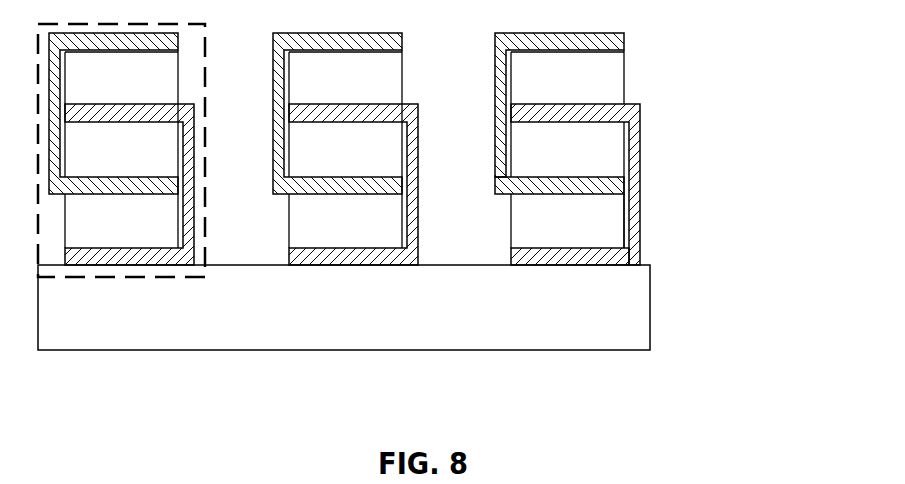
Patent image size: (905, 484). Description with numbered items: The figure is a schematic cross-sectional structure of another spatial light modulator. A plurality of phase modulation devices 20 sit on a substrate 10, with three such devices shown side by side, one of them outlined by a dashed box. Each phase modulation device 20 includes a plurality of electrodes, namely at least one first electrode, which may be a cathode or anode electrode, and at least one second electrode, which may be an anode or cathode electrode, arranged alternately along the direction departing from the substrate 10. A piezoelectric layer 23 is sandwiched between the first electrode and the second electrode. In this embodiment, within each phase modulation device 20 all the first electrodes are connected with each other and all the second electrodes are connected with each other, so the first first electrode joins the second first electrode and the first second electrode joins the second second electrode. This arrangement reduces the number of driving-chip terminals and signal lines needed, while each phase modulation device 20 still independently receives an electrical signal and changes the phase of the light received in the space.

The substrate 10 is at (383, 320).
The phase modulation device 20 is at (128, 277).
The piezoelectric layer 23 is at (573, 237).